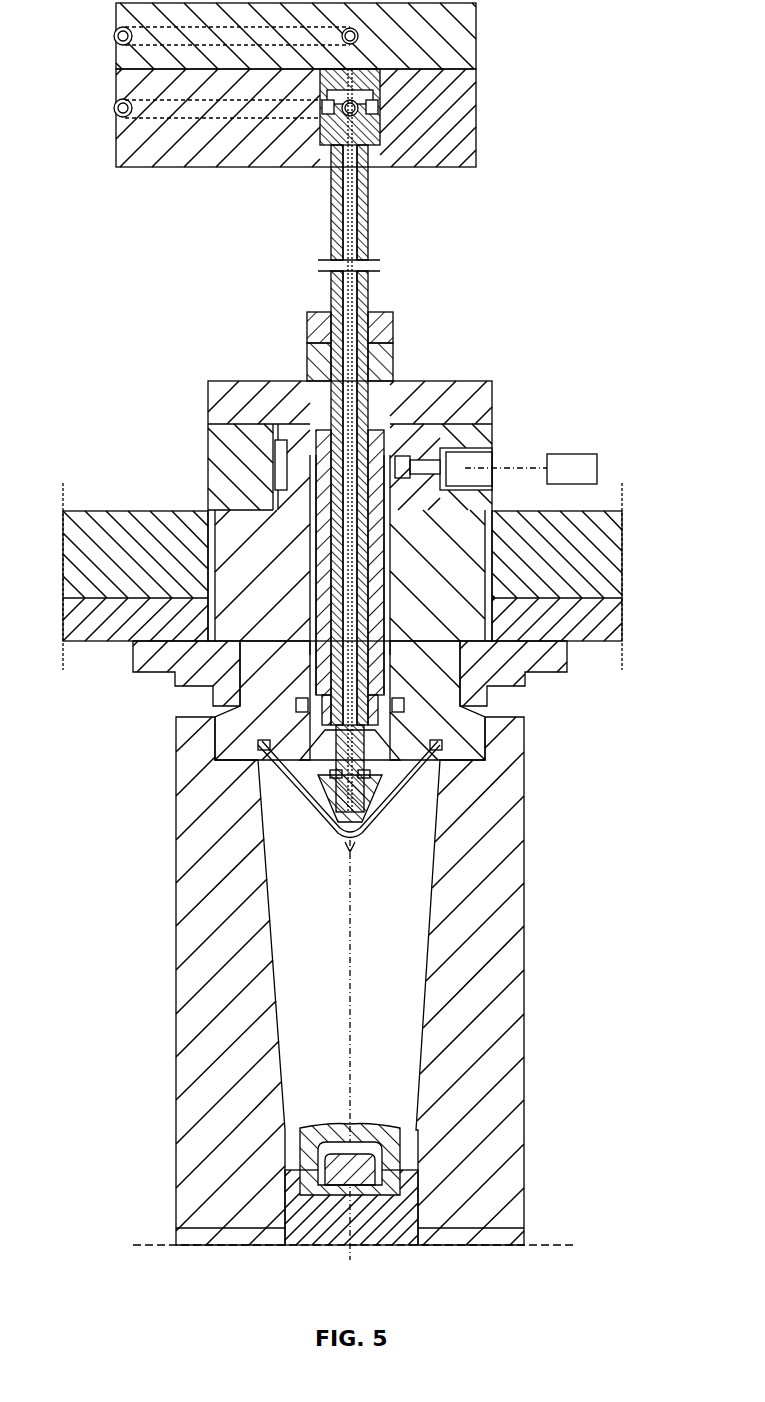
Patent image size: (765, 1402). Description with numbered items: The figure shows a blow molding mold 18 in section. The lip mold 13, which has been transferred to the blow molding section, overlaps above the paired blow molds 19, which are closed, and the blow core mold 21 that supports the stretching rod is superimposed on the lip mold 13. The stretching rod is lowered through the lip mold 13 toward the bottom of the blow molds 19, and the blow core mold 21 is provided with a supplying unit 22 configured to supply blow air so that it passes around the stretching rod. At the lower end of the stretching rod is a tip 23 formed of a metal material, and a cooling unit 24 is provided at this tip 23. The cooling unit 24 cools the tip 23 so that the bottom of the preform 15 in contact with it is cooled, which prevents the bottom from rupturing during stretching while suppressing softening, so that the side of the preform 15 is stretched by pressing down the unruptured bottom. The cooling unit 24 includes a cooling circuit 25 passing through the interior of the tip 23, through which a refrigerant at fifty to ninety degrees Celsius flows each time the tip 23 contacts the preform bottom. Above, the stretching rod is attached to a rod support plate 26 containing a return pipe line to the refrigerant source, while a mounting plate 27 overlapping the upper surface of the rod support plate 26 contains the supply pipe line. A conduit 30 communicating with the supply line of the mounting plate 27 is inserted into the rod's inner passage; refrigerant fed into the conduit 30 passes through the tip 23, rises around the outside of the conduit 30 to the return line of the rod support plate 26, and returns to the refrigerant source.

The lip mold 13 is at (497, 690).
The preform 15 is at (397, 805).
The blow molding mold 18 is at (478, 322).
The blow molds 19 is at (524, 955).
The blow core mold 21 is at (208, 463).
The supplying unit 22 is at (573, 453).
The tip 23 is at (300, 778).
The cooling unit 24 is at (325, 830).
The cooling circuit 25 is at (300, 705).
The rod support plate 26 is at (478, 117).
The mounting plate 27 is at (478, 35).
The conduit 30 is at (368, 212).